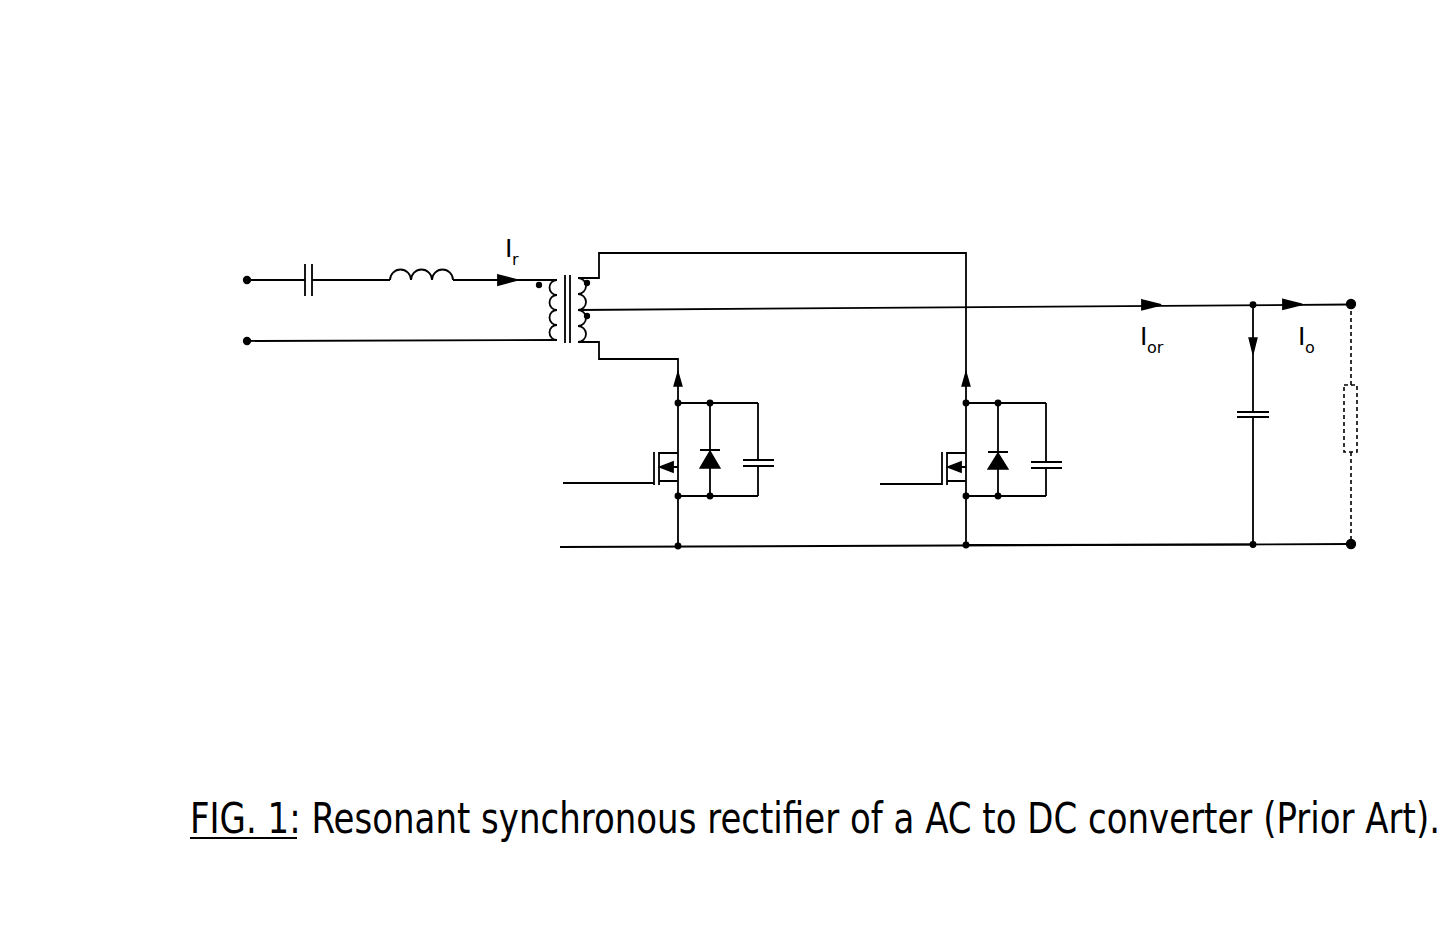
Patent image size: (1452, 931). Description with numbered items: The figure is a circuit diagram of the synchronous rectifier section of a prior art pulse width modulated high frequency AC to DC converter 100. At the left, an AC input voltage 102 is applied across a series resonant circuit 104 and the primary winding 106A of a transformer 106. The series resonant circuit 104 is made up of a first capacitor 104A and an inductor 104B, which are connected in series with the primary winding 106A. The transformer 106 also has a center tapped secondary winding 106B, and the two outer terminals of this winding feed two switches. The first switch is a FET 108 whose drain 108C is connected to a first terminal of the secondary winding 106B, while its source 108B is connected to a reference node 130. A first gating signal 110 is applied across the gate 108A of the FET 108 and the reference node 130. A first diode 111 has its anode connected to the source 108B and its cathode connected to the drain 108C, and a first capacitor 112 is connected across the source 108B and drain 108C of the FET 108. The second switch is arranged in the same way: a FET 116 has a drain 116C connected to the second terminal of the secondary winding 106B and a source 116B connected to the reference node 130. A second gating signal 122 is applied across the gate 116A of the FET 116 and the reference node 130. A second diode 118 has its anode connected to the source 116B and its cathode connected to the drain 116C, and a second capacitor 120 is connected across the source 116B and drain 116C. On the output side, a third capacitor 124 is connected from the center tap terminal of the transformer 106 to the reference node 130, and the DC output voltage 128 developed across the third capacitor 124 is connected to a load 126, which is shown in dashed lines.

The converter 100 is at (246, 168).
The AC input voltage 102 is at (226, 278).
The series resonant circuit 104 is at (329, 233).
The first capacitor 104A is at (303, 264).
The inductor 104B is at (416, 284).
The transformer 106 is at (568, 304).
The primary winding 106A is at (556, 276).
The center tapped secondary winding 106B is at (587, 276).
The FET 108 is at (668, 476).
The gate 108A is at (650, 485).
The source 108B is at (680, 498).
The drain 108C is at (677, 448).
The first gating signal 110 is at (546, 482).
The first diode 111 is at (720, 450).
The first capacitor 112 is at (775, 460).
The FET 116 is at (955, 476).
The gate 116A is at (938, 486).
The source 116B is at (968, 498).
The drain 116C is at (963, 453).
The second diode 118 is at (1012, 452).
The second capacitor 120 is at (1062, 460).
The second gating signal 122 is at (869, 485).
The third capacitor 124 is at (1247, 418).
The load 126 is at (1370, 320).
The DC output voltage 128 is at (1351, 424).
The reference node 130 is at (1118, 546).